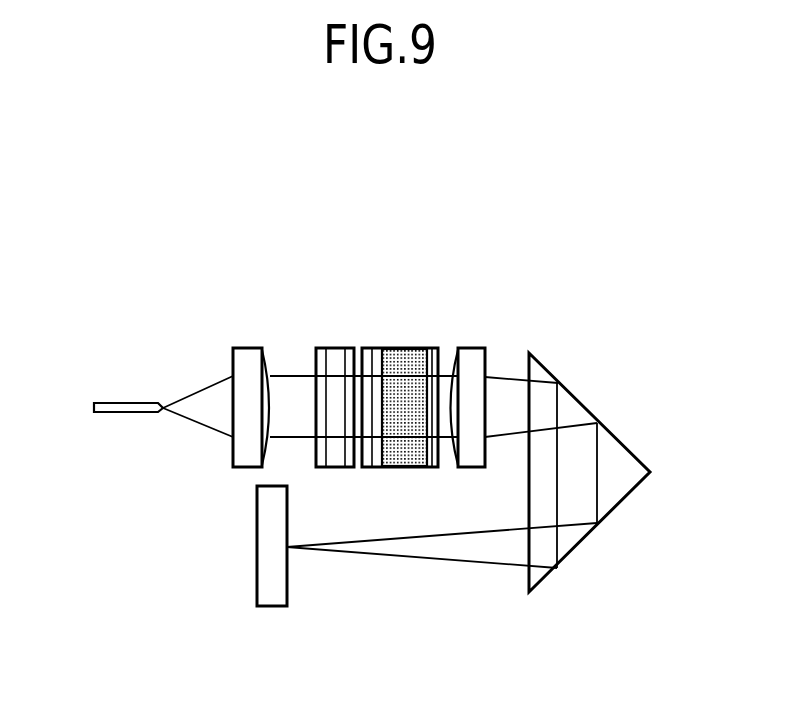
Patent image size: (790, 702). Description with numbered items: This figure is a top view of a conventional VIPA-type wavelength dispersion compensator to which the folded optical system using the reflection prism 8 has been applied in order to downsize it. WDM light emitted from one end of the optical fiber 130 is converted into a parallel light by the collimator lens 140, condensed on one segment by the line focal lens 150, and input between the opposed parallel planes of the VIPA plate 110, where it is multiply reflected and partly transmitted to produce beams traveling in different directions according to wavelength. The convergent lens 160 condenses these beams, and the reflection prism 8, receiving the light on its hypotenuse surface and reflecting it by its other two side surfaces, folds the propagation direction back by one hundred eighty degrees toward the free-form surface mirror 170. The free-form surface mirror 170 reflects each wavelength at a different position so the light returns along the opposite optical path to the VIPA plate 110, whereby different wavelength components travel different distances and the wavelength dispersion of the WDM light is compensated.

The reflection prism 8 is at (615, 432).
The VIPA plate 110 is at (402, 347).
The optical fiber 130 is at (126, 402).
The collimator lens 140 is at (247, 347).
The line focal lens 150 is at (337, 347).
The convergent lens 160 is at (473, 347).
The free-form surface mirror 170 is at (257, 557).